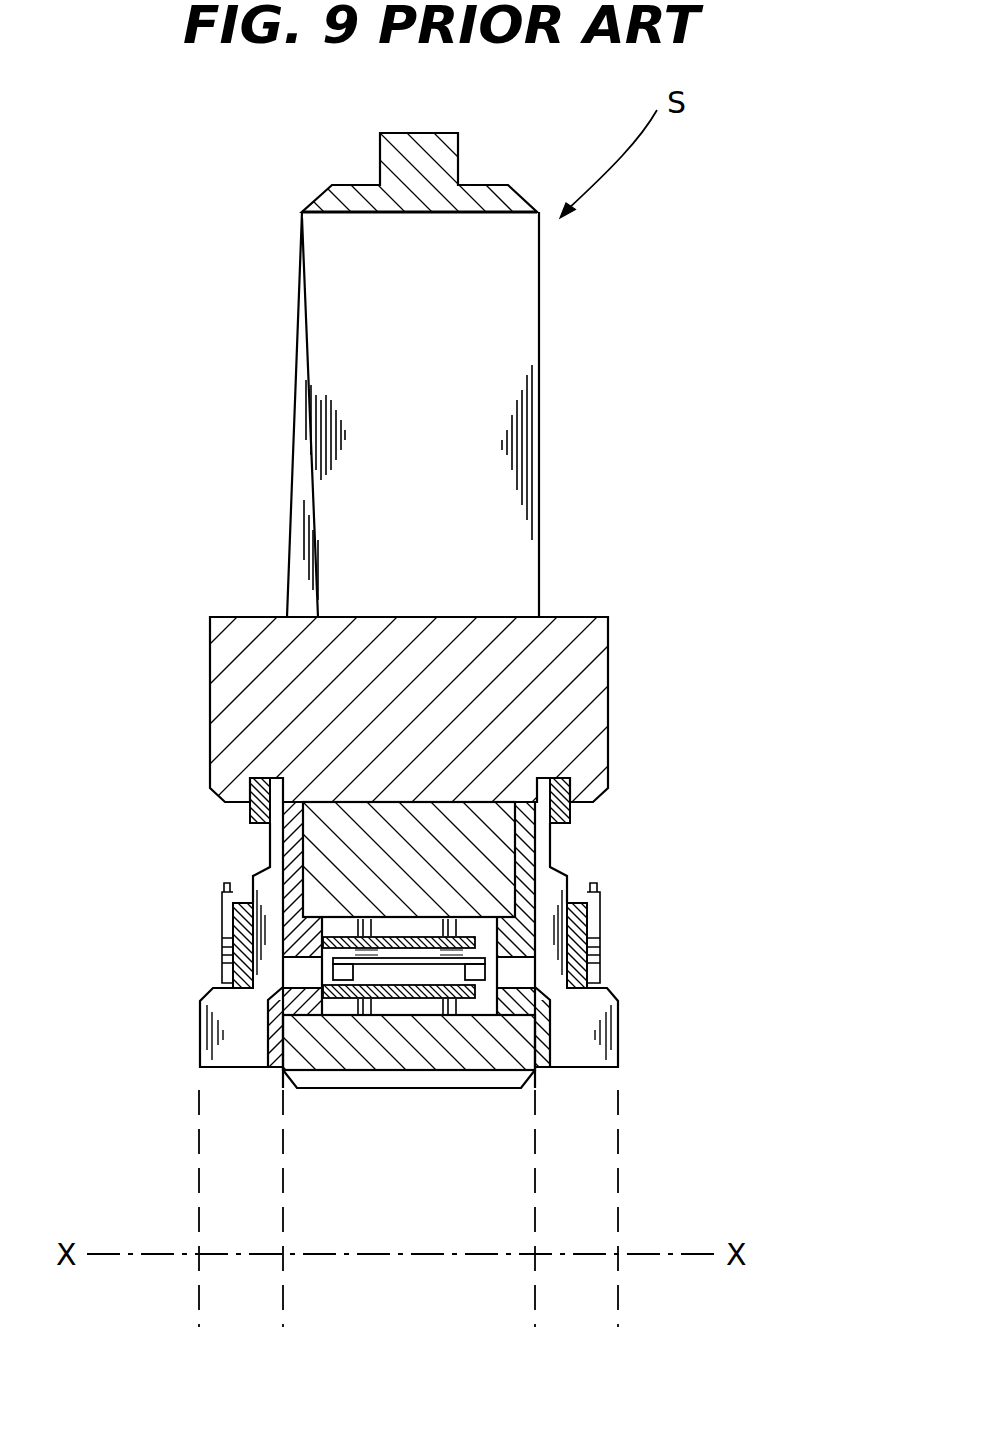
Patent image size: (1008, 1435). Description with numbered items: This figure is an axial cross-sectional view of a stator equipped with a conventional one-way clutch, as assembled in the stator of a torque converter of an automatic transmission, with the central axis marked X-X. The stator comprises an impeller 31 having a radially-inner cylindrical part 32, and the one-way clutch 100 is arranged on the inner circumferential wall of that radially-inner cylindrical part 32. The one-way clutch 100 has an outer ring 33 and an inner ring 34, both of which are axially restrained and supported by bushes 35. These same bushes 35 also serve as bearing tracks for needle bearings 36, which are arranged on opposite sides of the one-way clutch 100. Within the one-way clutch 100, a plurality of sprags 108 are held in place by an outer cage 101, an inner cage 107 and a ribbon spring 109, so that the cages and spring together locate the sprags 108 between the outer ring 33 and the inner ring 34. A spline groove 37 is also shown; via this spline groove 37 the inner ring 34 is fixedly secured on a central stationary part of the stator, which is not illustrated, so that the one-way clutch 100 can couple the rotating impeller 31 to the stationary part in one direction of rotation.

The impeller 31 is at (336, 372).
The radially-inner cylindrical part 32 is at (578, 660).
The outer ring 33 is at (345, 853).
The inner ring 34 is at (298, 1040).
The bushes 35 is at (580, 1057).
The needle bearings 36 is at (222, 917).
The spline groove 37 is at (482, 1078).
The one-way clutch 100 is at (505, 966).
The outer cage 101 is at (478, 935).
The inner cage 107 is at (480, 992).
The sprags 108 is at (370, 1013).
The ribbon spring 109 is at (417, 967).